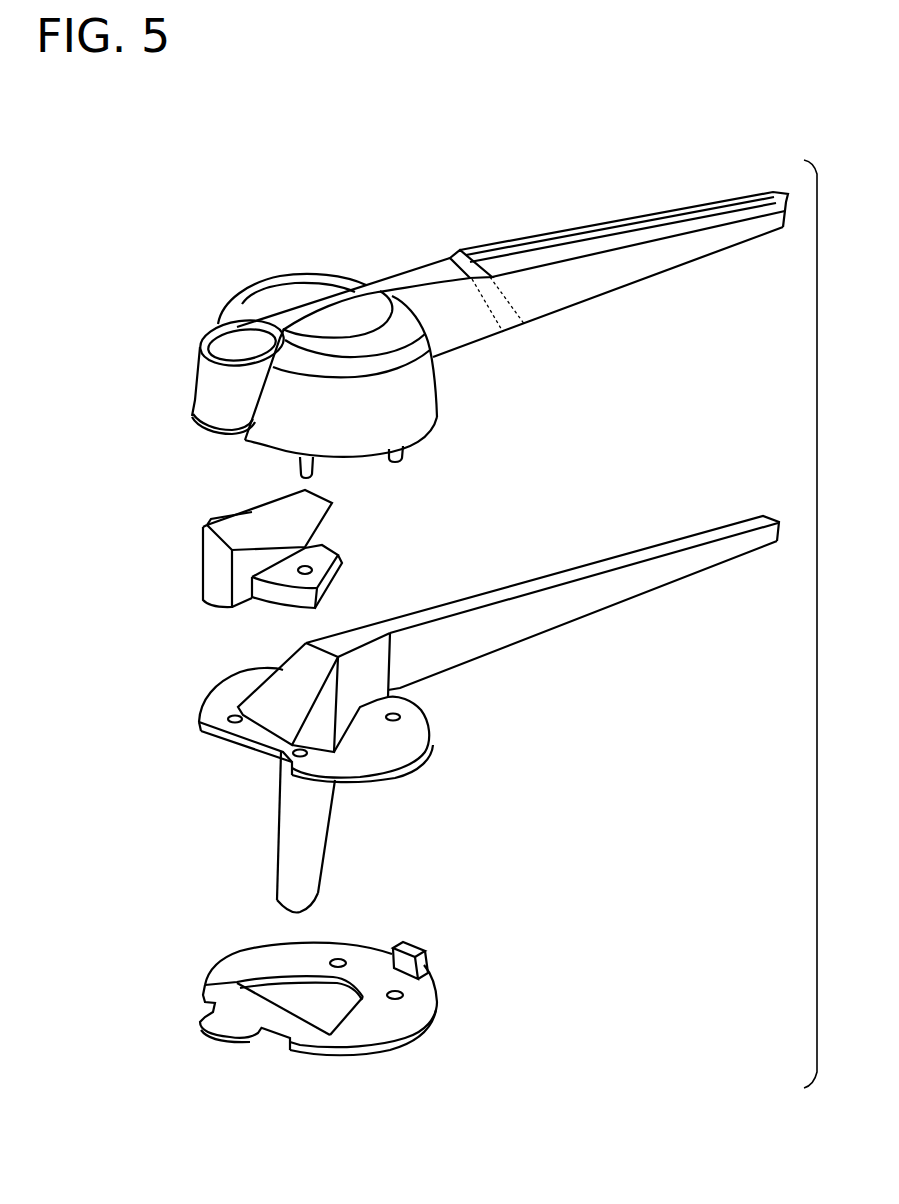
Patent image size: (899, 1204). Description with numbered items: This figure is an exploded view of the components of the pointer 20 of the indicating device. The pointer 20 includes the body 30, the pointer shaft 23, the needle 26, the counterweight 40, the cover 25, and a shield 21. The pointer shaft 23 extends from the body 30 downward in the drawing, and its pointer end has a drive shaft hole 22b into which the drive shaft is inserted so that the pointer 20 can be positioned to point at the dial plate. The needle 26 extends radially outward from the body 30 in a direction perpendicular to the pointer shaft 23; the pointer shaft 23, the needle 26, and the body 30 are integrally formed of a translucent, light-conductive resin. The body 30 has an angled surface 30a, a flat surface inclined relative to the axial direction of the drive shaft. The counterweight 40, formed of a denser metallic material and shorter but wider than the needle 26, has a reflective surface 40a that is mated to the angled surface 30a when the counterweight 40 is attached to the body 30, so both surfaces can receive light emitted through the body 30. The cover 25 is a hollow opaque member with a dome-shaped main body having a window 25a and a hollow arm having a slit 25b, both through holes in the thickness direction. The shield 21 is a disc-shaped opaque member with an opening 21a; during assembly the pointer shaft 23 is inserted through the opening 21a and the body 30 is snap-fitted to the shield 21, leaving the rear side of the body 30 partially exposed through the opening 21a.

The pointer 20 is at (861, 641).
The shield 21 is at (250, 1045).
The opening 21a is at (272, 992).
The drive shaft hole 22b is at (318, 893).
The pointer shaft 23 is at (330, 830).
The cover 25 is at (305, 270).
The window 25a is at (232, 348).
The slit 25b is at (622, 222).
The needle 26 is at (582, 540).
The body 30 is at (257, 646).
The angled surface 30a is at (283, 688).
The counterweight 40 is at (191, 510).
The reflective surface 40a is at (308, 527).